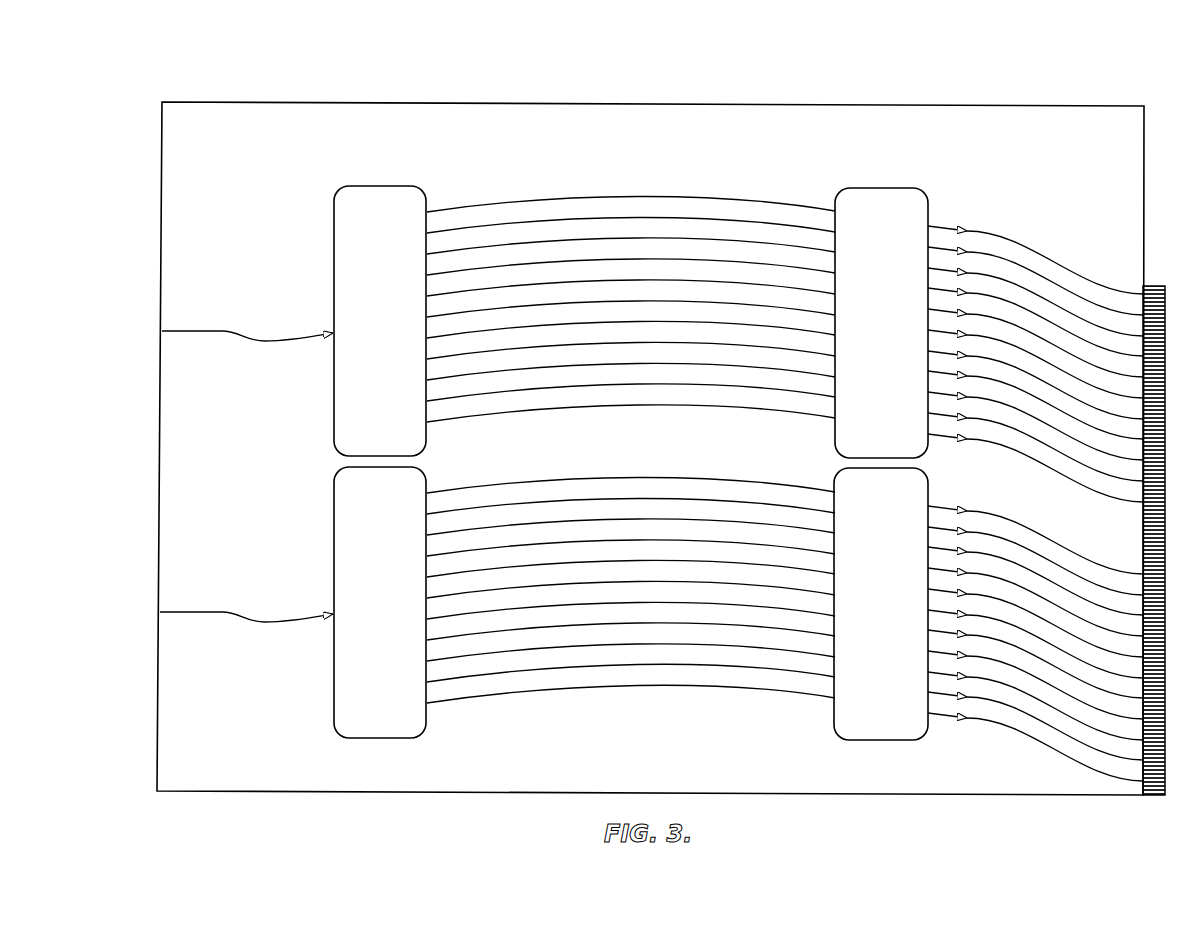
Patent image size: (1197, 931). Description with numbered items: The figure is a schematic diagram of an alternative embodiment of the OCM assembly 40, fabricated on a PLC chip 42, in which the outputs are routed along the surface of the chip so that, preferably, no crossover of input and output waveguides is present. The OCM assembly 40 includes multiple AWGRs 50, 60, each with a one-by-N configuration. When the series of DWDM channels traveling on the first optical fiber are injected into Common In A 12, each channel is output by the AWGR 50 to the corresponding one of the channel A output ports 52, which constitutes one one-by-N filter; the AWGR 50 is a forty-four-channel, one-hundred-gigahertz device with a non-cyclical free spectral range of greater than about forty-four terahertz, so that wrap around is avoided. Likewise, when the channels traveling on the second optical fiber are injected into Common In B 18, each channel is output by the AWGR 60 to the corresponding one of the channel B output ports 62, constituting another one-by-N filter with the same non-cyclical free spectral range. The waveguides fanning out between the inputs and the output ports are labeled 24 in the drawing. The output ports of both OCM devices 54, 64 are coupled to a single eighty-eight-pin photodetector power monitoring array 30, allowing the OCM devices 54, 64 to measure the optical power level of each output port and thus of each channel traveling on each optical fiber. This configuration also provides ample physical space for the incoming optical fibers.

The OCM assembly 40 is at (666, 409).
The PLC chip 42 is at (1048, 106).
The Common In A 12 is at (247, 338).
The Common In B 18 is at (246, 618).
The waveguide fan-out region 24 is at (631, 432).
The 88-PIN photodetector power monitoring array 30 is at (1159, 525).
The AWGR 50 is at (714, 212).
The Channels 1 (A)-44 (A) 52 is at (881, 323).
The OCM device 54 is at (894, 270).
The AWGR 60 is at (714, 494).
The Channels 1 (B)-44 (B) 62 is at (881, 604).
The OCM device 64 is at (894, 550).